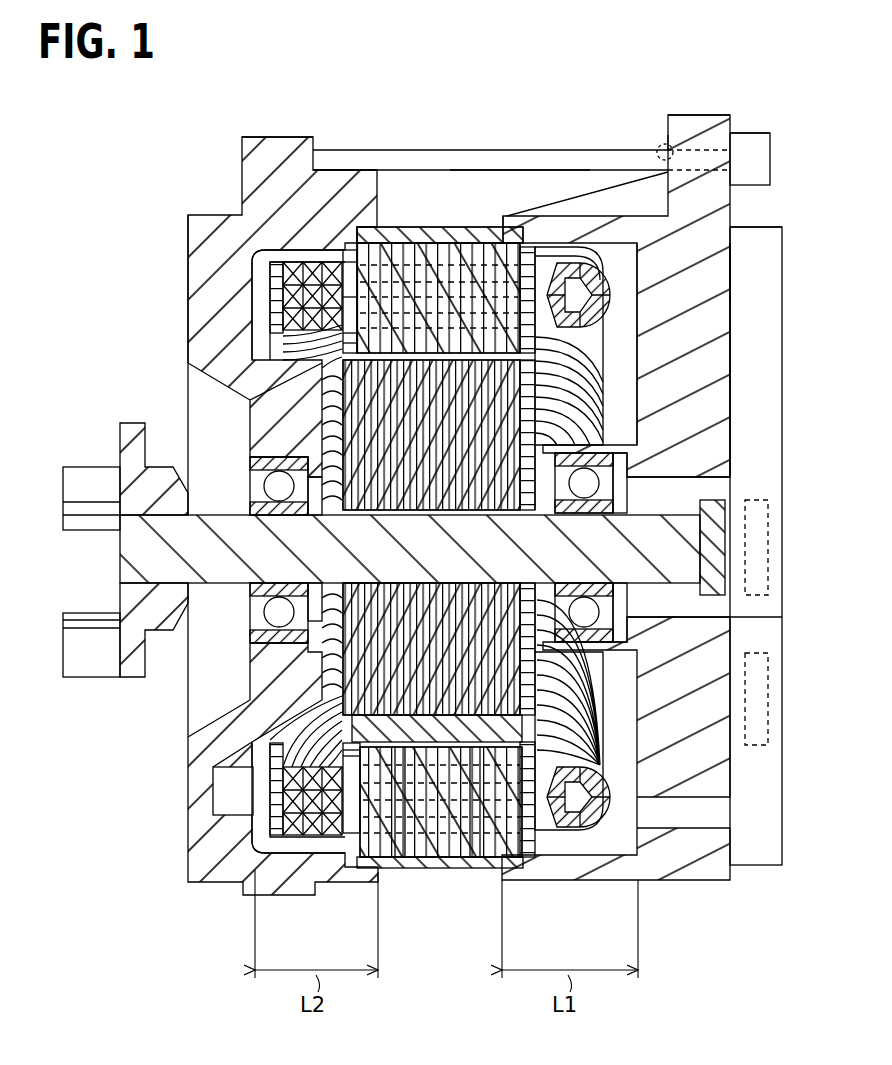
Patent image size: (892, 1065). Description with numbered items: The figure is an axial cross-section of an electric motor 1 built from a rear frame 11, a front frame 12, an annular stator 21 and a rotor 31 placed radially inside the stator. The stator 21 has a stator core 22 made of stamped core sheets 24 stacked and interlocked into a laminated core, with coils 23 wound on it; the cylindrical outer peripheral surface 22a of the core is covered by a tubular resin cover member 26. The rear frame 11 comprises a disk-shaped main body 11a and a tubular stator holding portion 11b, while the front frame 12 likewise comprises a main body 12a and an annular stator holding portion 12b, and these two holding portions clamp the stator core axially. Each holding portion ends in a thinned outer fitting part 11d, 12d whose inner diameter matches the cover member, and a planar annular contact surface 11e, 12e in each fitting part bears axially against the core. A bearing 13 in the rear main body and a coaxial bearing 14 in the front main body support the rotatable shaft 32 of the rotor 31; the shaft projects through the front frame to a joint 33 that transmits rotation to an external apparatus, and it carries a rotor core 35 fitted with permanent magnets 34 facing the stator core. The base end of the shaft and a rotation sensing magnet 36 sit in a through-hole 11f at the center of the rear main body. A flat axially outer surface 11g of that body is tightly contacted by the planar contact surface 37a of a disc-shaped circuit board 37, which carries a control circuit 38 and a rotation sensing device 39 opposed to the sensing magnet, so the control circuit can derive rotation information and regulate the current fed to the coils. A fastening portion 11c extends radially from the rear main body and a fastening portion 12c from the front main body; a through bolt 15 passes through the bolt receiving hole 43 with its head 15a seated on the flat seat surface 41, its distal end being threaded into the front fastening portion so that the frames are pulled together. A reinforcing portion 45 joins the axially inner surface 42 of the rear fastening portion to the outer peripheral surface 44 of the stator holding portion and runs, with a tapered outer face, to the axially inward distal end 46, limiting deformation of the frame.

The electric motor 1 is at (103, 260).
The rear frame 11 is at (733, 328).
The main body 11a is at (733, 390).
The stator holding portion 11b is at (596, 218).
The fastening portion 11c is at (692, 120).
The outer fitting part 11d is at (525, 195).
The contact surface 11e is at (572, 250).
The through-hole 11f is at (732, 488).
The axially outer surface 11g is at (738, 280).
The front frame 12 is at (188, 322).
The main body 12a is at (212, 787).
The stator holding portion 12b is at (333, 210).
The fastening portion 12c is at (278, 145).
The outer fitting part 12d is at (370, 222).
The contact surface 12e is at (262, 253).
The bearing 13 is at (628, 504).
The bearing 14 is at (250, 603).
The through bolt 15 is at (600, 155).
The head 15a is at (772, 150).
The stator 21 is at (582, 835).
The stator core 22 is at (345, 857).
The outer peripheral surface 22a is at (400, 232).
The coils 23 is at (600, 352).
The core sheets 24 is at (408, 857).
The cover member 26 is at (466, 235).
The rotor 31 is at (345, 433).
The rotatable shaft 32 is at (636, 578).
The joint 33 is at (95, 666).
The permanent magnets 34 is at (323, 697).
The rotor core 35 is at (604, 690).
The rotation sensing magnet 36 is at (740, 604).
The circuit board 37 is at (784, 352).
The contact surface 37a is at (742, 245).
The control circuit 38 is at (770, 696).
The rotation sensing device 39 is at (770, 532).
The seat surface 41 is at (740, 135).
The axially inner surface 42 is at (668, 140).
The bolt receiving hole 43 is at (658, 150).
The outer peripheral surface 44 is at (518, 168).
The reinforcing portion 45 is at (562, 214).
The axially inward distal end 46 is at (487, 216).